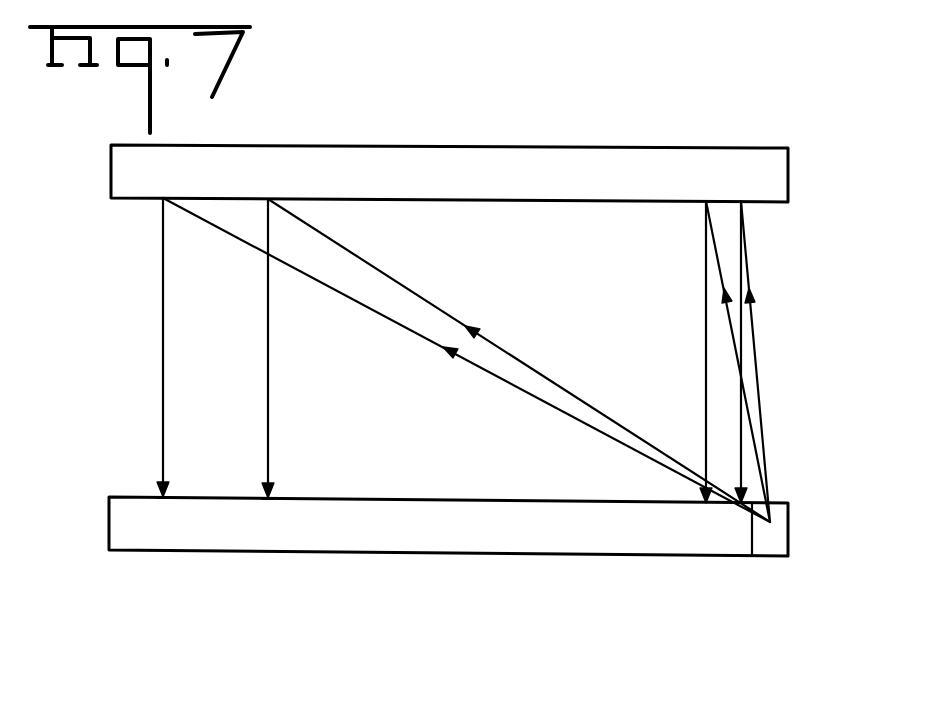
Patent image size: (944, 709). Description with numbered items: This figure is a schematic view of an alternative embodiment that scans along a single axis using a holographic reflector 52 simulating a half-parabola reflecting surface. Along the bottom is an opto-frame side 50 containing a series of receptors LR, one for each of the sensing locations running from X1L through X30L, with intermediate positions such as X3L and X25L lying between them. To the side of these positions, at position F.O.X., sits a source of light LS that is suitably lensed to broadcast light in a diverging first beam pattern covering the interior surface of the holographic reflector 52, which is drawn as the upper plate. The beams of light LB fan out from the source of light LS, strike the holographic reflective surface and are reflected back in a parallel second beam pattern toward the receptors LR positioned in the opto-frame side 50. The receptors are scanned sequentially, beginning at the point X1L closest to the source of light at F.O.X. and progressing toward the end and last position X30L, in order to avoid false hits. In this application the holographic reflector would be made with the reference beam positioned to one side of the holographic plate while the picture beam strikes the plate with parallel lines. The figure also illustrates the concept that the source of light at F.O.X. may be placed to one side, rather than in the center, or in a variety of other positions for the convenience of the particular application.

The holographic reflector 52 is at (497, 182).
The opto-frame side 50 is at (338, 535).
The receptors LR is at (268, 490).
The beams of light LB is at (430, 295).
The source of light LS is at (775, 497).
The receptor location X3L is at (743, 505).
The receptor location X1L is at (732, 512).
The light source position F.O.X. is at (827, 568).
The receptor location X30L is at (215, 577).
The receptor location X25L is at (275, 510).